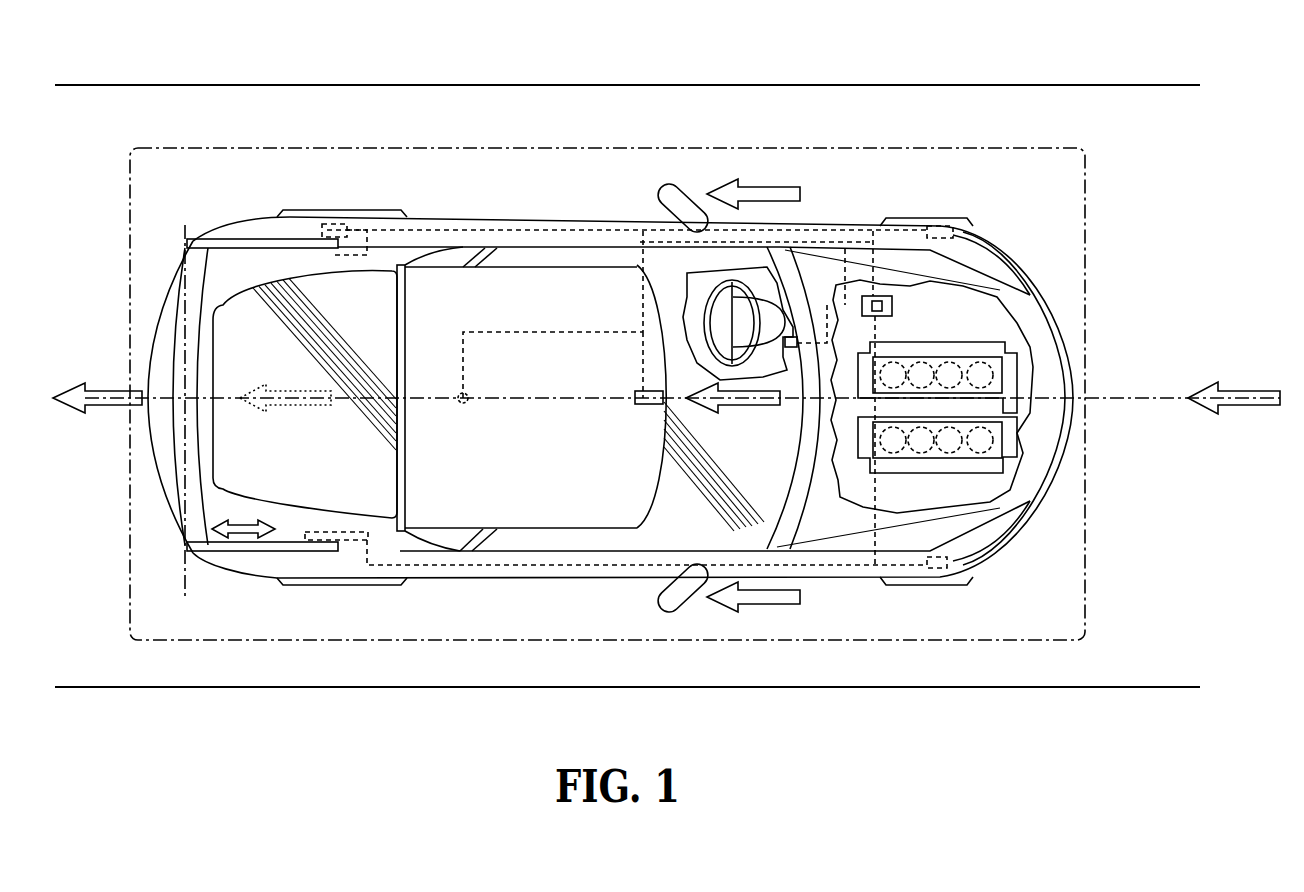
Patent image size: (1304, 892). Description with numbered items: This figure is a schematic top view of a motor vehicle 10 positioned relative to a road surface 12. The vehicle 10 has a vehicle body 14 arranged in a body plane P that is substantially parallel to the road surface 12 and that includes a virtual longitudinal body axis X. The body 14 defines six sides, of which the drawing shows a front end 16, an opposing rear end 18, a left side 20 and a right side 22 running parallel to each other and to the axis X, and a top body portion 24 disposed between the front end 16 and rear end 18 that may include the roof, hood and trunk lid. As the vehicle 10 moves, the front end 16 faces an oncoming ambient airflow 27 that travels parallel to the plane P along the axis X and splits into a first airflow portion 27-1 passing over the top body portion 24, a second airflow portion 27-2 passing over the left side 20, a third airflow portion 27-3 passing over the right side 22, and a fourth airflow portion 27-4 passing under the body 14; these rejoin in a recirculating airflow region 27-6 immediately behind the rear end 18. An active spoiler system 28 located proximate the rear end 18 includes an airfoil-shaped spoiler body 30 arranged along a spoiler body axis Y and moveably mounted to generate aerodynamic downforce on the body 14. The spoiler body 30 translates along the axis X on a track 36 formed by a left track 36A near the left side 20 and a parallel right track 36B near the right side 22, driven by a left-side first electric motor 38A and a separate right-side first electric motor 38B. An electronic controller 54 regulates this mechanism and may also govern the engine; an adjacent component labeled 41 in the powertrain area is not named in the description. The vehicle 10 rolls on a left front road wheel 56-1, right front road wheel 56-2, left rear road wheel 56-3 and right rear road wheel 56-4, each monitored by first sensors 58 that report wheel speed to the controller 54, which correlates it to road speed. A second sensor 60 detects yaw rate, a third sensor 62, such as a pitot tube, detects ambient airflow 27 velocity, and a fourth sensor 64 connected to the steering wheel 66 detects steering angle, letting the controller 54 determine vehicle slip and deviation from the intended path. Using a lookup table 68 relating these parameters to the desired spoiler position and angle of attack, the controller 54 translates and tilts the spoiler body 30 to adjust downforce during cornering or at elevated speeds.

The motor vehicle 10 is at (1058, 578).
The road surface 12 is at (636, 674).
The vehicle body 14 is at (547, 303).
The front end 16 is at (1043, 332).
The rear end 18 is at (152, 352).
The left side 20 is at (630, 214).
The right side 22 is at (545, 572).
The top body portion 24 is at (554, 409).
The ambient airflow 27 is at (1245, 385).
The first airflow portion 27-1 is at (755, 408).
The second airflow portion 27-2 is at (765, 182).
The third airflow portion 27-3 is at (770, 605).
The fourth airflow portion 27-4 is at (290, 410).
The recirculating airflow region 27-6 is at (112, 406).
The active spoiler system 28 is at (163, 284).
The spoiler body 30 is at (181, 471).
The track 36 is at (250, 239).
The left track 36A is at (272, 239).
The right track 36B is at (237, 553).
The left-side first electric motor 38A is at (307, 258).
The right-side first electric motor 38B is at (315, 532).
The engine block 41 is at (996, 339).
The electronic controller 54 is at (875, 296).
The left front road wheel 56-1 is at (968, 218).
The right front road wheel 56-2 is at (958, 580).
The left rear road wheel 56-3 is at (297, 212).
The right rear road wheel 56-4 is at (320, 582).
The first sensors 58 is at (342, 214).
The second sensor 60 is at (462, 406).
The third sensor 62 is at (650, 407).
The fourth sensor 64 is at (722, 374).
The steering wheel 66 is at (702, 322).
The lookup table 68 is at (878, 300).
The body plane P is at (318, 642).
The longitudinal body axis X is at (1150, 400).
The spoiler body axis Y is at (183, 228).